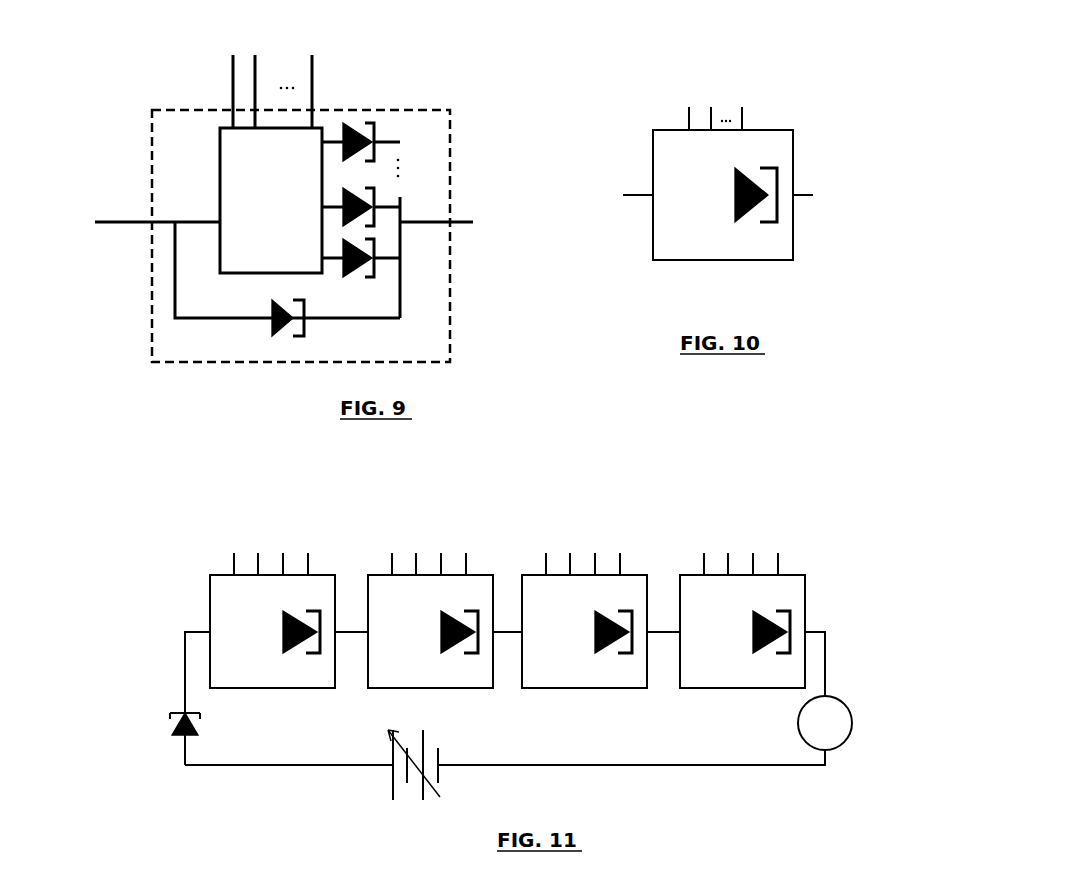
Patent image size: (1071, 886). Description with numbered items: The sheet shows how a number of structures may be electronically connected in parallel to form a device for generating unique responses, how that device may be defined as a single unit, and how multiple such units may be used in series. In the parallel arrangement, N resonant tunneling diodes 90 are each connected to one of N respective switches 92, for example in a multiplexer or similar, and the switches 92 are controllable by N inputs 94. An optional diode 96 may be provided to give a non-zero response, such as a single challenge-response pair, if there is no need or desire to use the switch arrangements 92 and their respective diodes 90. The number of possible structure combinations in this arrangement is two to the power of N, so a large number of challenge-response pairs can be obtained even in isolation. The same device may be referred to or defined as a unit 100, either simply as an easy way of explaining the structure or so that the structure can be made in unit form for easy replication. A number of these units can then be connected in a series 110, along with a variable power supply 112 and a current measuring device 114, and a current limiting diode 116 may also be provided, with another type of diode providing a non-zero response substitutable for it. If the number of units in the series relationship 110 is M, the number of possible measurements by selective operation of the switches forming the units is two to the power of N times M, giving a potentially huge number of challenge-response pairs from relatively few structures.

In FIG. 9, the resonant tunneling diodes 90 is at (397, 123).
In FIG. 9, the switches 92 is at (284, 198).
In FIG. 9, the inputs 94 is at (210, 65).
In FIG. 9, the diode 96 is at (247, 333).
In FIG. 10, the unit 100 is at (827, 123).
In FIG. 11, the series 110 is at (810, 550).
In FIG. 11, the variable power supply 112 is at (378, 785).
In FIG. 11, the current measuring device 114 is at (862, 707).
In FIG. 11, the current limiting diode 116 is at (163, 745).